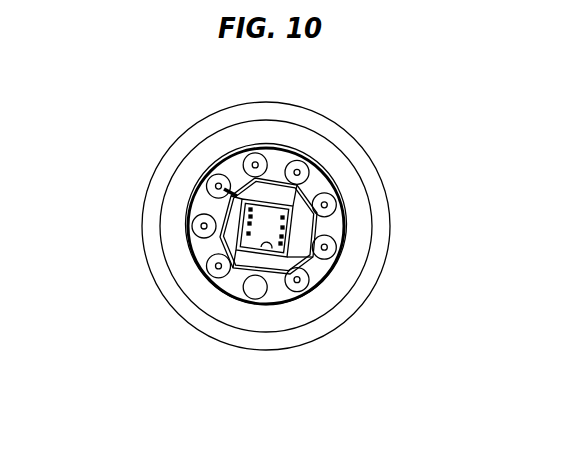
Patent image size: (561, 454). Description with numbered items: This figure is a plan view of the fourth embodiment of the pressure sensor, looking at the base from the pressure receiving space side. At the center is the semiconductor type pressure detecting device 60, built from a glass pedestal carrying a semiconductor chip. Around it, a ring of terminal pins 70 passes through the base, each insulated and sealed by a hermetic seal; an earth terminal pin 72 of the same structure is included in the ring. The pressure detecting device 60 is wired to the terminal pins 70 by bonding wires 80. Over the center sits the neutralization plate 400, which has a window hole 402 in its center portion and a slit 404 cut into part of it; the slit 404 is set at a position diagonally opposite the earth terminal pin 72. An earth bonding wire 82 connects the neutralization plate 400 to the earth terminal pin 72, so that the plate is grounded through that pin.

The semiconductor type pressure detecting device 60 is at (308, 224).
The terminal pin 70 is at (294, 128).
The earth terminal pin 72 is at (156, 186).
The bonding wire 80 is at (221, 241).
The earth bonding wire 82 is at (229, 189).
The neutralization plate 400 is at (349, 228).
The window hole 402 is at (277, 258).
The slit 404 is at (308, 277).